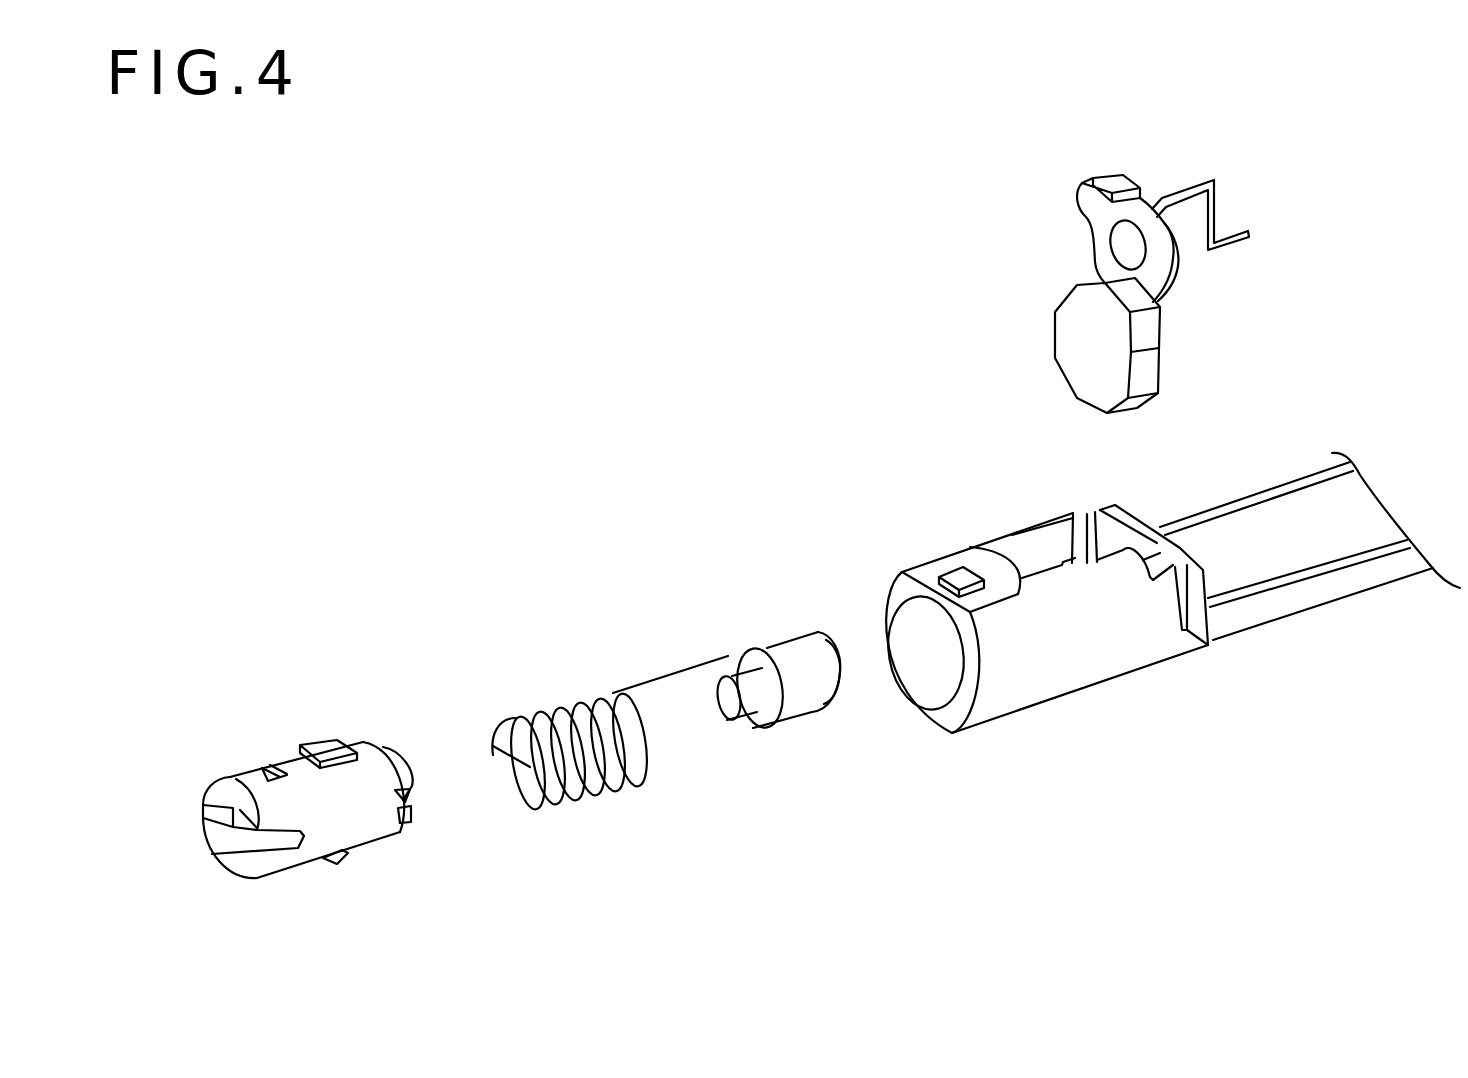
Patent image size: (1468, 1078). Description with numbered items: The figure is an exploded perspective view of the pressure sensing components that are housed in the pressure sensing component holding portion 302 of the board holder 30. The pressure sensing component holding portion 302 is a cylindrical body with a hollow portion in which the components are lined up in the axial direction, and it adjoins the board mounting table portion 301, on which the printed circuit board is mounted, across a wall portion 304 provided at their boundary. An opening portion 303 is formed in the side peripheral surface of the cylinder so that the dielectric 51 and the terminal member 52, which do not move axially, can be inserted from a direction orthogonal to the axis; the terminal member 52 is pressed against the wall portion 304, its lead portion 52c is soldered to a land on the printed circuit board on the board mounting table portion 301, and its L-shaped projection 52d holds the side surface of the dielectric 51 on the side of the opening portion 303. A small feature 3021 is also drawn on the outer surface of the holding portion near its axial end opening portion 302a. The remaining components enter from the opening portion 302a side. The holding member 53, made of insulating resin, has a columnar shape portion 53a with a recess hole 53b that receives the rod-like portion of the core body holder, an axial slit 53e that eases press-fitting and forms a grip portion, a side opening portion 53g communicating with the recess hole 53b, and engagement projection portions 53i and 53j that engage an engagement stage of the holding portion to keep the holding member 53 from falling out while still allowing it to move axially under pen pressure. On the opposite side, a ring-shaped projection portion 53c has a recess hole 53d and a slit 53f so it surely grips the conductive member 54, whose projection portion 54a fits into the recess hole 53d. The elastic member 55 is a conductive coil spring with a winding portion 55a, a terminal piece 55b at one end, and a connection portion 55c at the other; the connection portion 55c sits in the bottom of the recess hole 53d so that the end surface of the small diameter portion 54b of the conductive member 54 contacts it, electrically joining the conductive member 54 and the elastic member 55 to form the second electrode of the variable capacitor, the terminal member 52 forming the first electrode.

The board holder 30 is at (1131, 583).
The board mounting table portion 301 is at (1407, 567).
The pressure sensing component holding portion 302 is at (1057, 583).
The opening portion 302a is at (907, 638).
The protrusion 3021 is at (960, 572).
The opening portion 303 is at (1180, 548).
The wall portion 304 is at (1133, 530).
The dielectric 51 is at (1070, 336).
The terminal member 52 is at (1104, 196).
The lead portion 52c is at (1195, 188).
The L-shaped projection 52d is at (1122, 176).
The holding member 53 is at (286, 794).
The columnar shape portion 53a is at (248, 776).
The recess hole 53b is at (235, 848).
The ring-shaped projection portion 53c is at (390, 750).
The recess hole 53d is at (410, 790).
The slit 53e is at (203, 808).
The slit 53f is at (409, 806).
The opening portion 53g is at (263, 767).
The engagement projection portion 53i is at (320, 745).
The engagement projection portion 53j is at (340, 863).
The conductive member 54 is at (827, 756).
The projection portion 54a is at (798, 708).
The small diameter portion 54b is at (735, 700).
The elastic member 55 is at (599, 731).
The winding portion 55a is at (608, 783).
The terminal piece 55b is at (670, 672).
The connection portion 55c is at (496, 752).